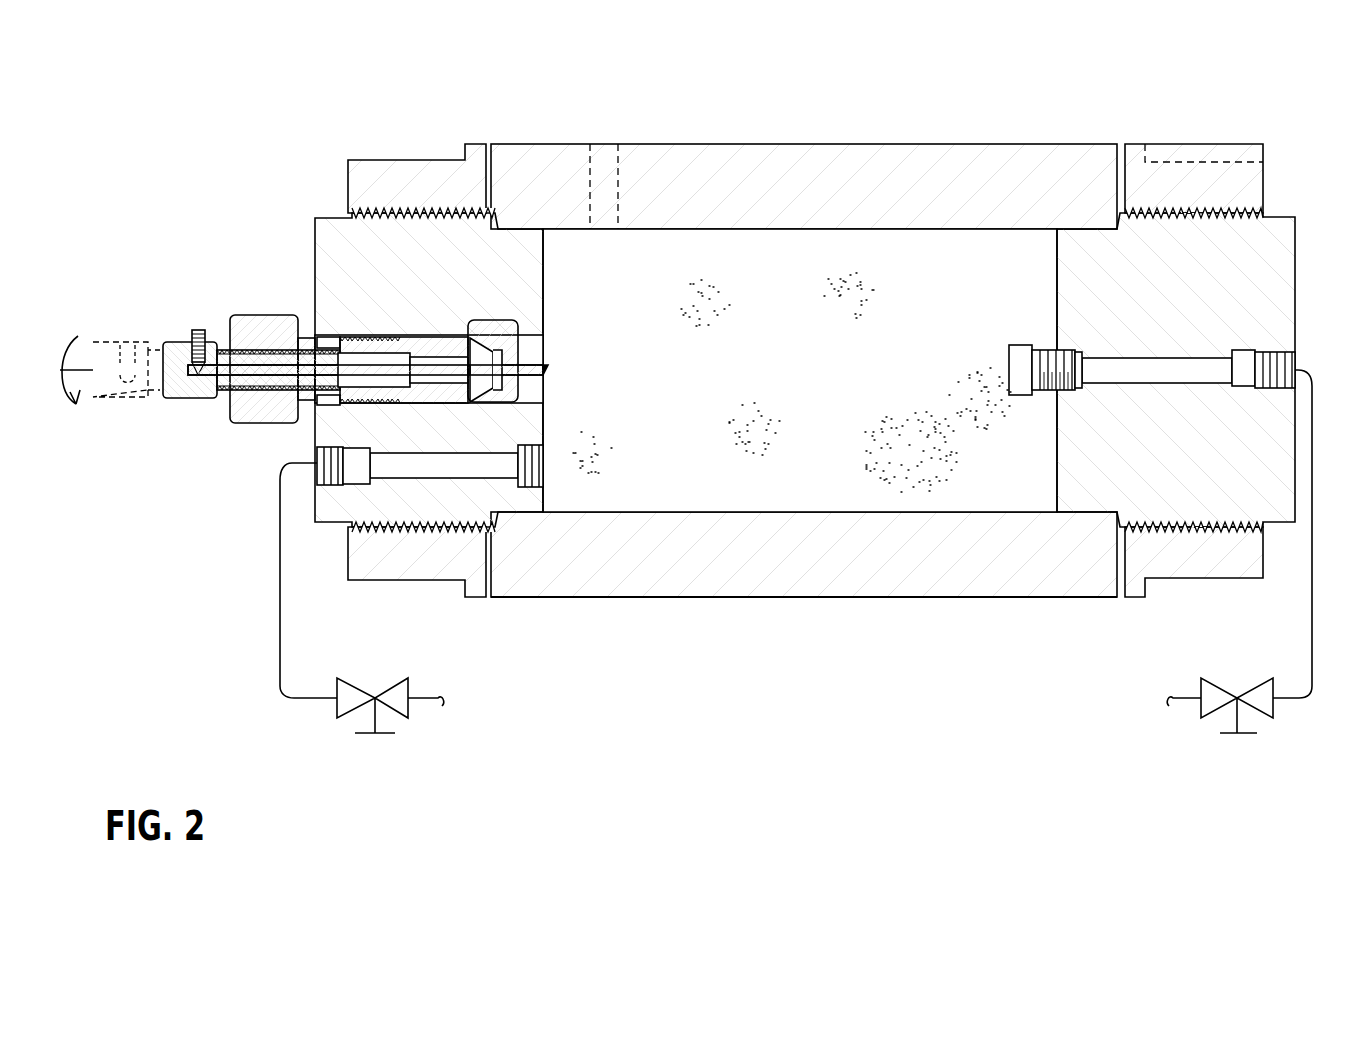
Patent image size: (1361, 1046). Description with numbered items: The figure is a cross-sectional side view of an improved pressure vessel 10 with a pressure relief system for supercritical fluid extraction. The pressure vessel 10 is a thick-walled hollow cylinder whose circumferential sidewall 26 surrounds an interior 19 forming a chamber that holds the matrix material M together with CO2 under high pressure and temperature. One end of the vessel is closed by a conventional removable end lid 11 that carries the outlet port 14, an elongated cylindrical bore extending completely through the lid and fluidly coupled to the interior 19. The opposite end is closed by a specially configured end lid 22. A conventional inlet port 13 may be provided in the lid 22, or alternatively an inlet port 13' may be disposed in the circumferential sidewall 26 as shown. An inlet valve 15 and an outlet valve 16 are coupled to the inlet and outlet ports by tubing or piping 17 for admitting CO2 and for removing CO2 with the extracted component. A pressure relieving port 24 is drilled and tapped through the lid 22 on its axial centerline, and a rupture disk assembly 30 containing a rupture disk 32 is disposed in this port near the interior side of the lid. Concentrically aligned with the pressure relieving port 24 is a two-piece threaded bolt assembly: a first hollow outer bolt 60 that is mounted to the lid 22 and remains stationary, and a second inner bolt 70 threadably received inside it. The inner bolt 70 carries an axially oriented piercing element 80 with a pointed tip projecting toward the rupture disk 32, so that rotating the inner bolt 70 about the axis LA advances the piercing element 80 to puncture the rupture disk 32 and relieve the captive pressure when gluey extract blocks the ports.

The pressure vessel 10 is at (838, 144).
The end lid 11 is at (1280, 236).
The inlet port 13 is at (430, 540).
The inlet port 13' is at (641, 151).
The outlet port 14 is at (1167, 368).
The inlet valve 15 is at (400, 718).
The outlet valve 16 is at (1213, 718).
The tubing or piping 17 is at (280, 651).
The interior 19 is at (752, 291).
The end lid 22 is at (338, 240).
The pressure relieving port 24 is at (425, 400).
The circumferential sidewall 26 is at (786, 597).
The rupture disk assembly 30 is at (323, 318).
The rupture disk 32 is at (505, 403).
The first hollow outer bolt 60 is at (236, 425).
The second inner bolt 70 is at (178, 345).
The piercing element 80 is at (368, 367).
The matrix material M is at (777, 432).
The longitudinal axis of rotation LA is at (74, 335).